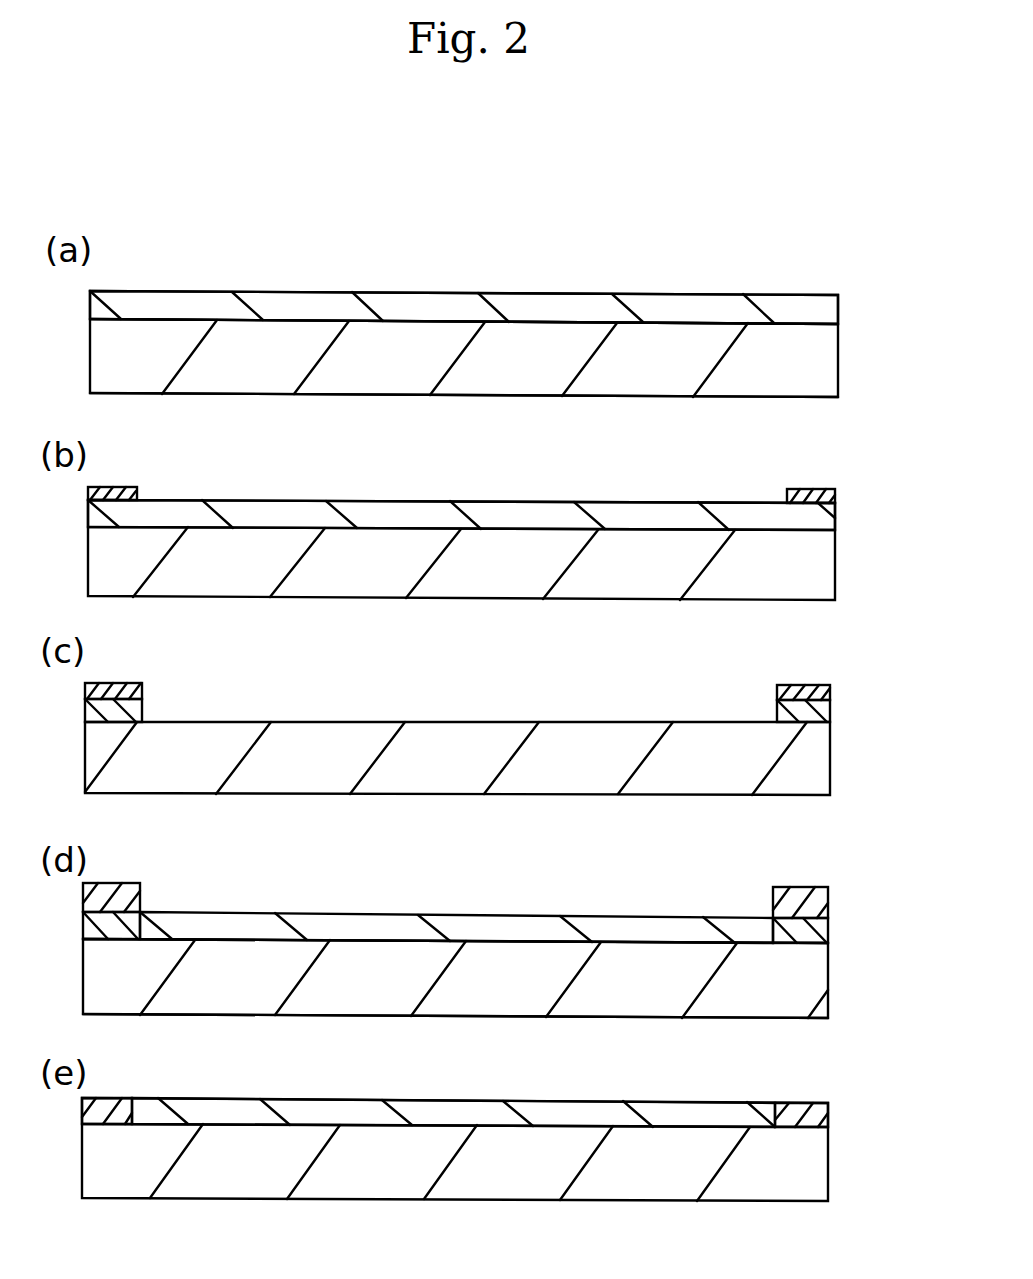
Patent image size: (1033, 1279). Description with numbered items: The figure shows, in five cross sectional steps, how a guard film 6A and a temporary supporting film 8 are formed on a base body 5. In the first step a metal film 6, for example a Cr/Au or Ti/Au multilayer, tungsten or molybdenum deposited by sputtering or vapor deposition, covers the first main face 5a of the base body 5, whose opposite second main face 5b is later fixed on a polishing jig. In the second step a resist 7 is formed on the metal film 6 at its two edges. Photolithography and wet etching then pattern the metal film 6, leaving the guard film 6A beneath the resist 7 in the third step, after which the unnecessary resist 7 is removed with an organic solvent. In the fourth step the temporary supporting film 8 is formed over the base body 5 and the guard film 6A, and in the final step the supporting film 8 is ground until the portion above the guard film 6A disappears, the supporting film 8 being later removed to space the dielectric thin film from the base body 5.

The base body 5 is at (830, 376).
The first main face 5a is at (657, 322).
The second main face 5b is at (617, 397).
The metal film 6 is at (830, 309).
The resist 7 is at (830, 489).
The guard film 6A is at (820, 715).
The temporary supporting film 8 is at (657, 927).